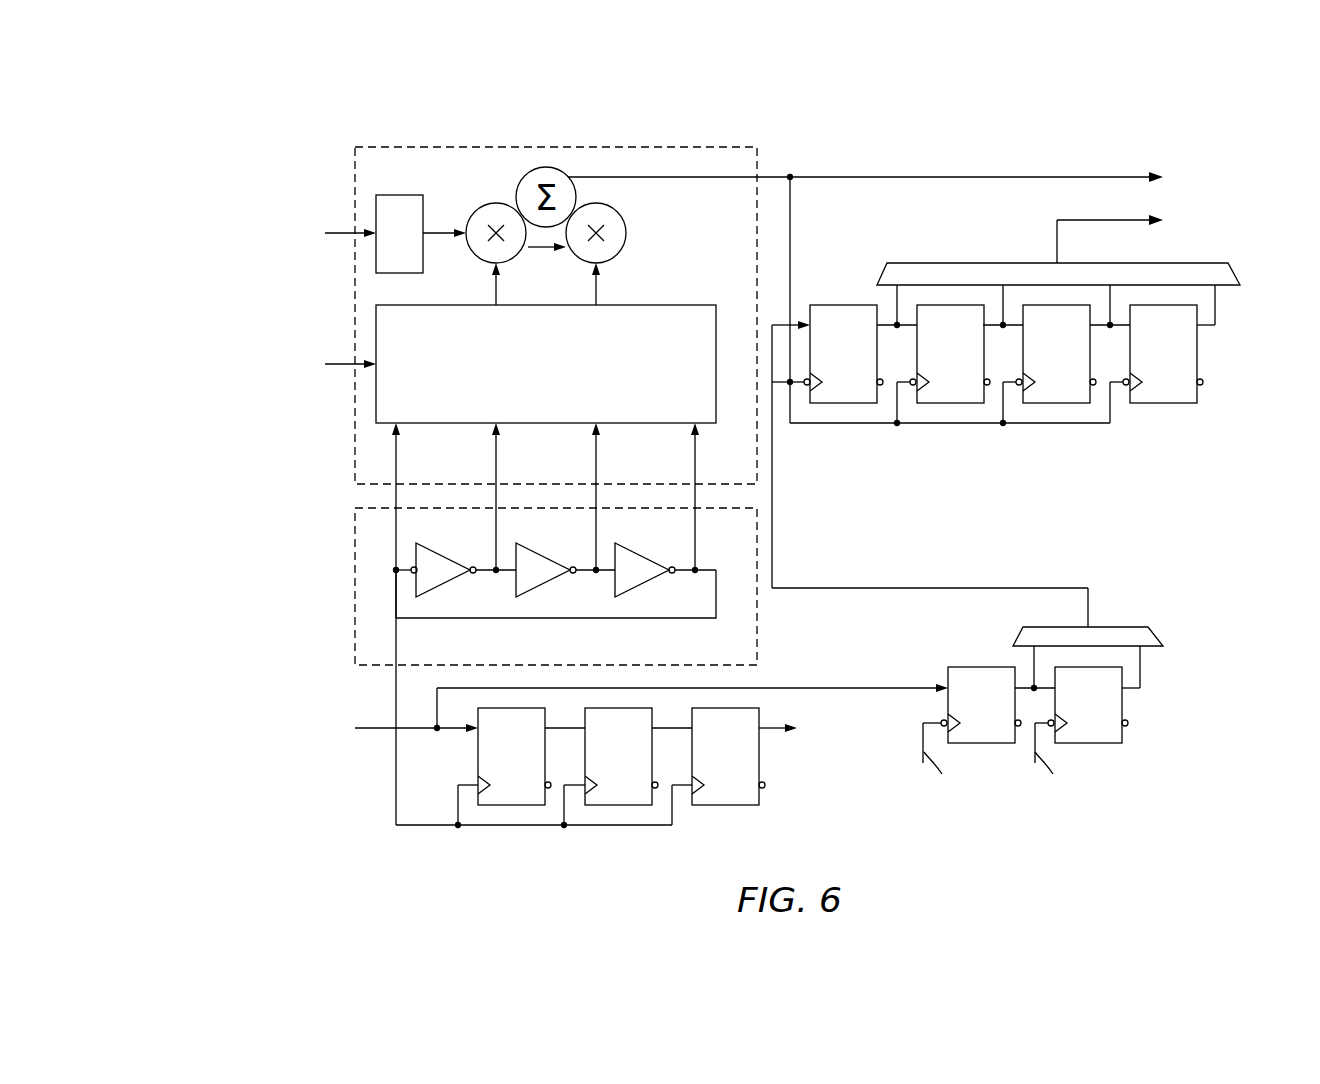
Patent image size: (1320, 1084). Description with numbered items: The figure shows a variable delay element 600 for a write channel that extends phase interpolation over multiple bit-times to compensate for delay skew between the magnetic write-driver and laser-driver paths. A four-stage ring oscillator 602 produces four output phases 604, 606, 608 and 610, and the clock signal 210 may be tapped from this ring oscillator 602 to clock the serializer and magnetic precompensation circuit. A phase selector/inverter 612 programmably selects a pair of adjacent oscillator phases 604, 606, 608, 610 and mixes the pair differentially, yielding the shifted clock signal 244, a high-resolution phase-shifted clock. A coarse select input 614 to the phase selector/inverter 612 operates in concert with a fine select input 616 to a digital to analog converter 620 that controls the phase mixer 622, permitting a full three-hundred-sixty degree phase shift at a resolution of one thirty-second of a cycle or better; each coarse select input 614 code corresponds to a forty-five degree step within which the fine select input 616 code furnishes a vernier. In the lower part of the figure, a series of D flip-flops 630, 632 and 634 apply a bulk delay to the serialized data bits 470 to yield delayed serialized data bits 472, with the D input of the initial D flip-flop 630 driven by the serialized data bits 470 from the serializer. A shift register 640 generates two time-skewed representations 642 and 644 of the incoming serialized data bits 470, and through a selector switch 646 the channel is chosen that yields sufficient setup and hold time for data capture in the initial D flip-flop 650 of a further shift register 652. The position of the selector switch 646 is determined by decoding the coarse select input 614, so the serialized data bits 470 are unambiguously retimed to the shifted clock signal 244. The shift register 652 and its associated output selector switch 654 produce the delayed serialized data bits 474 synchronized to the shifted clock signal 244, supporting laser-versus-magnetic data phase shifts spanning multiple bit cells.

The variable delay element 600 is at (1165, 118).
The output phase 604 is at (396, 490).
The four-stage ring oscillator 602 is at (740, 655).
The output phase 606 is at (496, 517).
The output phase 608 is at (596, 517).
The output phase 610 is at (695, 517).
The phase selector/inverter 612 is at (528, 419).
The coarse select input 614 is at (196, 366).
The fine select input 616 is at (220, 235).
The digital to analog converter 620 is at (382, 262).
The phase mixer 622 is at (627, 230).
The shifted clock signal 244 is at (917, 176).
The delayed serialized data bits 474 is at (1057, 242).
The output selector switch 654 is at (880, 275).
The initial D flip-flop 650 is at (825, 367).
The shift register 652 is at (1035, 382).
The clock signal 210 is at (396, 688).
The serialized data bits 470 is at (375, 731).
The delayed serialized data bits 472 is at (769, 732).
The D flip-flop 630 is at (493, 770).
The D flip-flop 632 is at (600, 770).
The D flip-flop 634 is at (707, 770).
The shift register 640 is at (1066, 720).
The time-skewed representation 642 is at (1031, 667).
The time-skewed representation 644 is at (1148, 667).
The selector switch 646 is at (1135, 626).